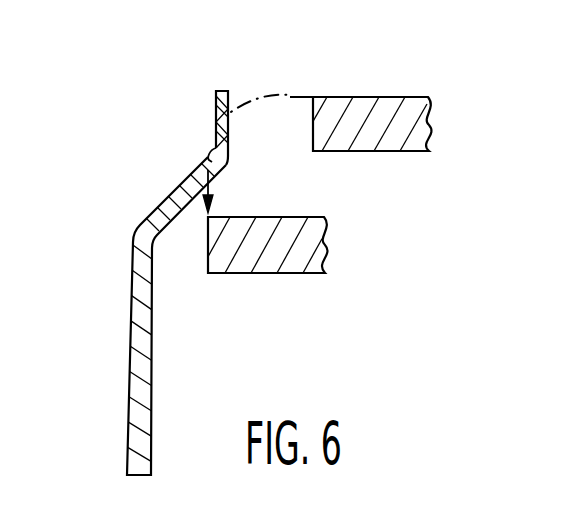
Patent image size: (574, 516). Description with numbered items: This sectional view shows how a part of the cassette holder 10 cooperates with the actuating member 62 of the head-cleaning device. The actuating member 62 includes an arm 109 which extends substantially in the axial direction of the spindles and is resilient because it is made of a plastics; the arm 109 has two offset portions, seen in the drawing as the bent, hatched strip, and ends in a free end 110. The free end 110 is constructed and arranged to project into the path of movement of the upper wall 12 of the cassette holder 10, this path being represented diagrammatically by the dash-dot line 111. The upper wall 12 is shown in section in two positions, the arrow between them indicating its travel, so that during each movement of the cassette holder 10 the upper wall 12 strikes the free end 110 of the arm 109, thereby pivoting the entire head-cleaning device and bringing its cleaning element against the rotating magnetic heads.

The cassette holder 10 is at (443, 131).
The upper wall 12 is at (351, 96).
The actuating member 62 is at (118, 382).
The arm 109 is at (131, 315).
The free end 110 is at (215, 103).
The dash-dot line 111 is at (260, 95).